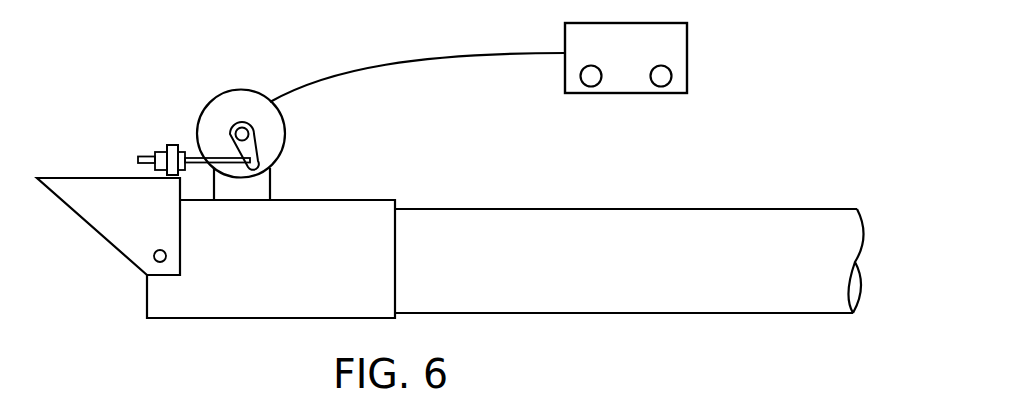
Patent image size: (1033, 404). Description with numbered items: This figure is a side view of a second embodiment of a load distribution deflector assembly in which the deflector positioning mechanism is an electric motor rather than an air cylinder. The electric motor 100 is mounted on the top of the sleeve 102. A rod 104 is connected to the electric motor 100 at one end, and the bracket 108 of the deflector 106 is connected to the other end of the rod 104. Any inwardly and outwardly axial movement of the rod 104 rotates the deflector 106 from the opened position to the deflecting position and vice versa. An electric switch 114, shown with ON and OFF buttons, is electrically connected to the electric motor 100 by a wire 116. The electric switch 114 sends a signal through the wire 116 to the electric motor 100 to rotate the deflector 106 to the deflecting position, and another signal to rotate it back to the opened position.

The electric motor 100 is at (228, 100).
The sleeve 102 is at (351, 214).
The rod 104 is at (201, 157).
The deflector 106 is at (107, 225).
The bracket 108 is at (167, 145).
The electric switch 114 is at (672, 23).
The wire 116 is at (437, 57).